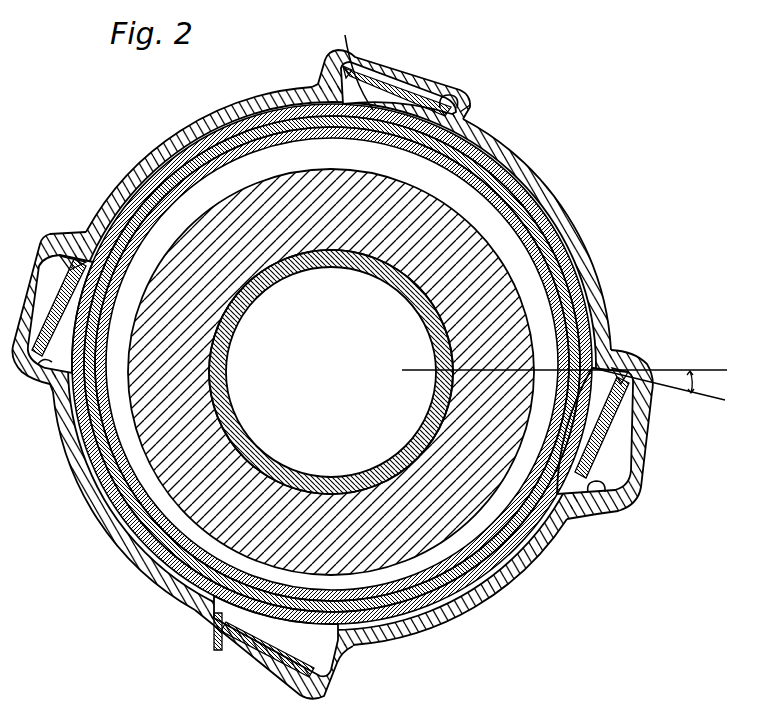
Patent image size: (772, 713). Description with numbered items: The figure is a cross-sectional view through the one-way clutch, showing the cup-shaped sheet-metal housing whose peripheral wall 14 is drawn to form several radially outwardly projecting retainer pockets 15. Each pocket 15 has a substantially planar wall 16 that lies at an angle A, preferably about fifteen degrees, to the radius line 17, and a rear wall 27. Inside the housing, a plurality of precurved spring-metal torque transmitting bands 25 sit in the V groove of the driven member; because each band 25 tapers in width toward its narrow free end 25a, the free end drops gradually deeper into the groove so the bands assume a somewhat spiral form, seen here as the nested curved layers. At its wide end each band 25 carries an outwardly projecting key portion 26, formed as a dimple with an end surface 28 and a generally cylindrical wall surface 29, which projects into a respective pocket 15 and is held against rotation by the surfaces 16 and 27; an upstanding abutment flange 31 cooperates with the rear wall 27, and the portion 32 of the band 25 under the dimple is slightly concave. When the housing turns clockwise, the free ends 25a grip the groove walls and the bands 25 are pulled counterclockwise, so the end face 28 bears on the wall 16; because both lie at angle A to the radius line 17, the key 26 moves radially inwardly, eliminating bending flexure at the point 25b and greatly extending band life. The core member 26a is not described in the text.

The peripheral wall 14 is at (556, 210).
The retainer pocket 15 is at (430, 70).
The wall of the pocket 16 is at (345, 70).
The radius line 17 is at (716, 368).
The torque transmitting band 25 is at (332, 364).
The free end of the band 25a is at (332, 134).
The point of the band 25b is at (285, 100).
The key portion 26 is at (388, 90).
The core member 26a is at (100, 376).
The rear wall of the pocket 27 is at (455, 114).
The end surface of the key 28 is at (340, 86).
The cylindrical wall surface 29 is at (607, 443).
The abutment flange 31 is at (458, 94).
The concave portion of the band 32 is at (340, 65).
The angle A is at (694, 388).